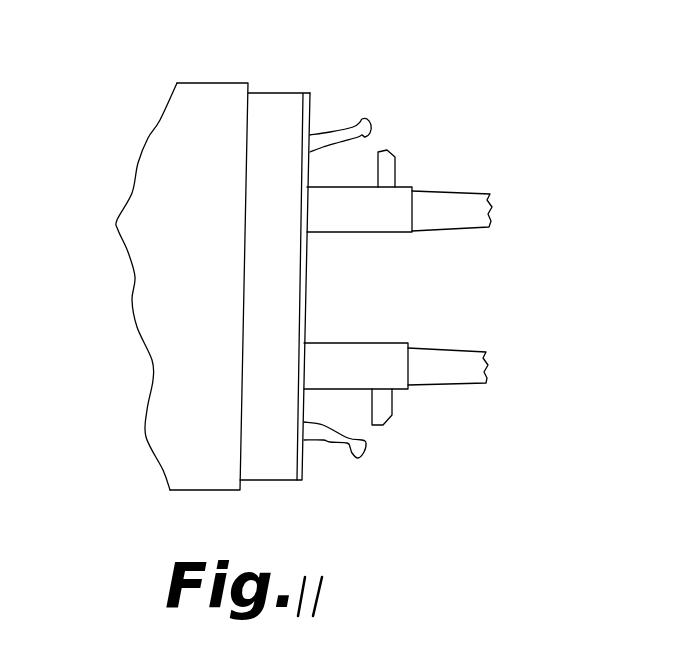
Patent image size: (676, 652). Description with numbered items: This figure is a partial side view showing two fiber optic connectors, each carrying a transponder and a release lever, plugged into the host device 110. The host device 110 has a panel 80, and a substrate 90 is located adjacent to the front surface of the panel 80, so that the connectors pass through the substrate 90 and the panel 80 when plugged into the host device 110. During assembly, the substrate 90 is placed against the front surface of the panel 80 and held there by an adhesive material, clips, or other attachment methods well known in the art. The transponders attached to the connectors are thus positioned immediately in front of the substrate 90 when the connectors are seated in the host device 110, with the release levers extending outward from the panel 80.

The mounting plate 80 is at (267, 483).
The outer layer of plate 90 is at (302, 477).
The circuit board 110 is at (185, 492).